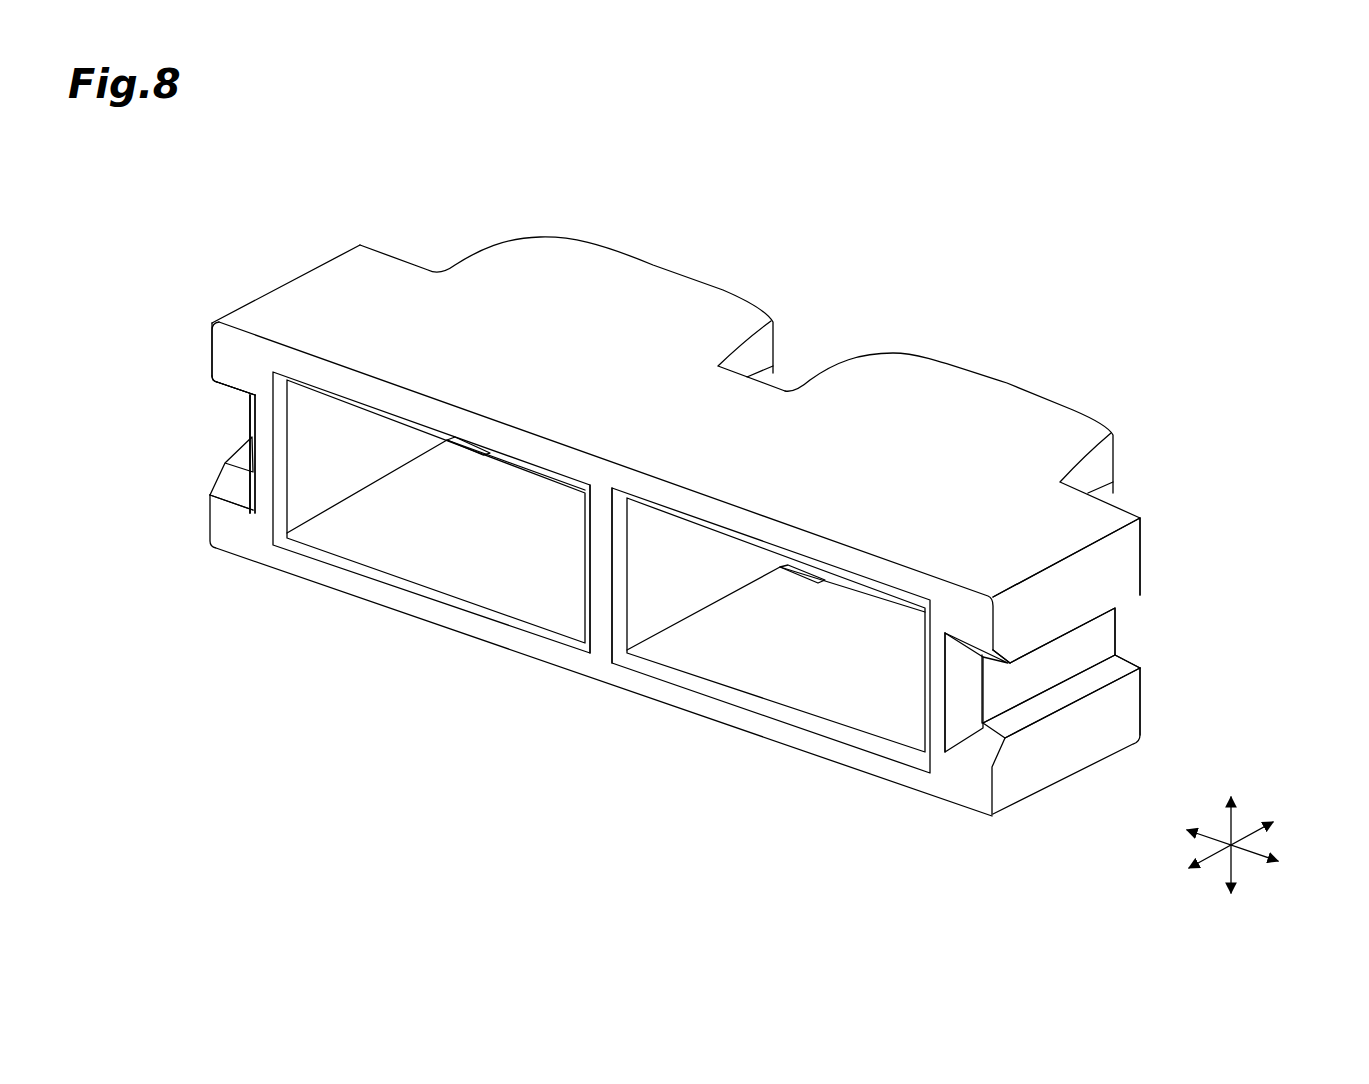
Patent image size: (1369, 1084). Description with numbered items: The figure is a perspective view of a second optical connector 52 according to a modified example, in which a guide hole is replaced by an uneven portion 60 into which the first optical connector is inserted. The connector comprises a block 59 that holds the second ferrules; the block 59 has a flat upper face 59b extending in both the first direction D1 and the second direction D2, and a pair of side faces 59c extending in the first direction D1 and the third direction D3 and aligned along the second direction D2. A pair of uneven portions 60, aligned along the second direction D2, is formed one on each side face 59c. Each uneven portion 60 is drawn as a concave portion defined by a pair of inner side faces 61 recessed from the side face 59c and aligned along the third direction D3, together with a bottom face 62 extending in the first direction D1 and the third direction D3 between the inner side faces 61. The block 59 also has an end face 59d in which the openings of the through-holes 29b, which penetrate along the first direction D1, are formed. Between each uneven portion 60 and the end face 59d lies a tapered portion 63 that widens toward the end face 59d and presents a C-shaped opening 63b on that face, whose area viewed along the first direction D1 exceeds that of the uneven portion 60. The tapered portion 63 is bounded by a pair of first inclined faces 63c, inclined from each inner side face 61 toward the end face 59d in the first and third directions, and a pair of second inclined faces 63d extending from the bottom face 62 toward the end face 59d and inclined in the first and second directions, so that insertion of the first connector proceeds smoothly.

The second optical connector 52 is at (851, 236).
The block 59 is at (989, 397).
The upper face 59b is at (653, 268).
The side face 59c is at (208, 362).
The end face 59d is at (600, 656).
The uneven portion 60 is at (212, 387).
The inner side face 61 is at (252, 403).
The bottom face 62 is at (253, 428).
The tapered portion 63 is at (258, 467).
The opening 63b is at (259, 468).
The first inclined face 63c is at (250, 462).
The second inclined face 63d is at (262, 430).
The through-hole 29b is at (585, 548).
The first direction D1 is at (1252, 834).
The second direction D2 is at (1252, 855).
The third direction D3 is at (1227, 868).